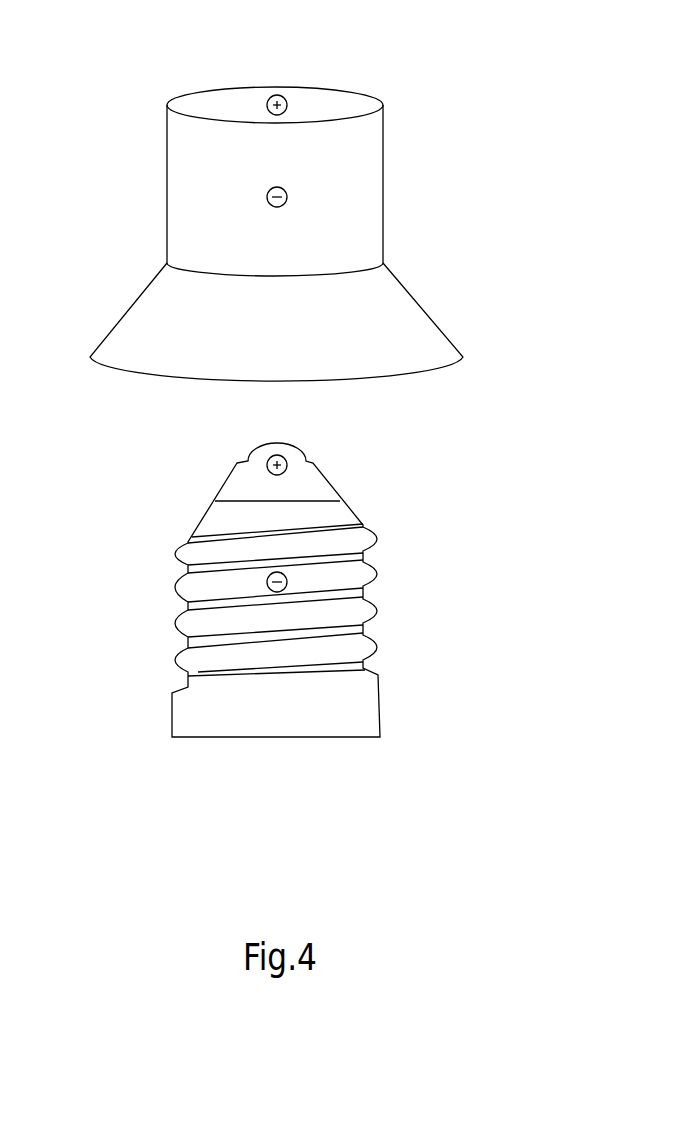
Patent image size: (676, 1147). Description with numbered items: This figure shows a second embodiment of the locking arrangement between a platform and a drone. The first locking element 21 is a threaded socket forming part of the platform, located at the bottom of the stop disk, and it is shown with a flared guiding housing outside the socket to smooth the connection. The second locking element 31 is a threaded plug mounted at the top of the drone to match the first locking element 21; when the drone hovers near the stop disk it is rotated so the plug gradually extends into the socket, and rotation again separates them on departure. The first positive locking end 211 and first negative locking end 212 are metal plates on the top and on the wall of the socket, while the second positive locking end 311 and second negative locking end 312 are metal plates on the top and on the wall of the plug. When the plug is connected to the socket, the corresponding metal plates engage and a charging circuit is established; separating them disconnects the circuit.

The first locking element 21 is at (447, 158).
The first positive locking end 211 is at (267, 101).
The first negative locking end 212 is at (267, 192).
The second locking element 31 is at (414, 596).
The second positive locking end 311 is at (267, 462).
The second negative locking end 312 is at (267, 578).